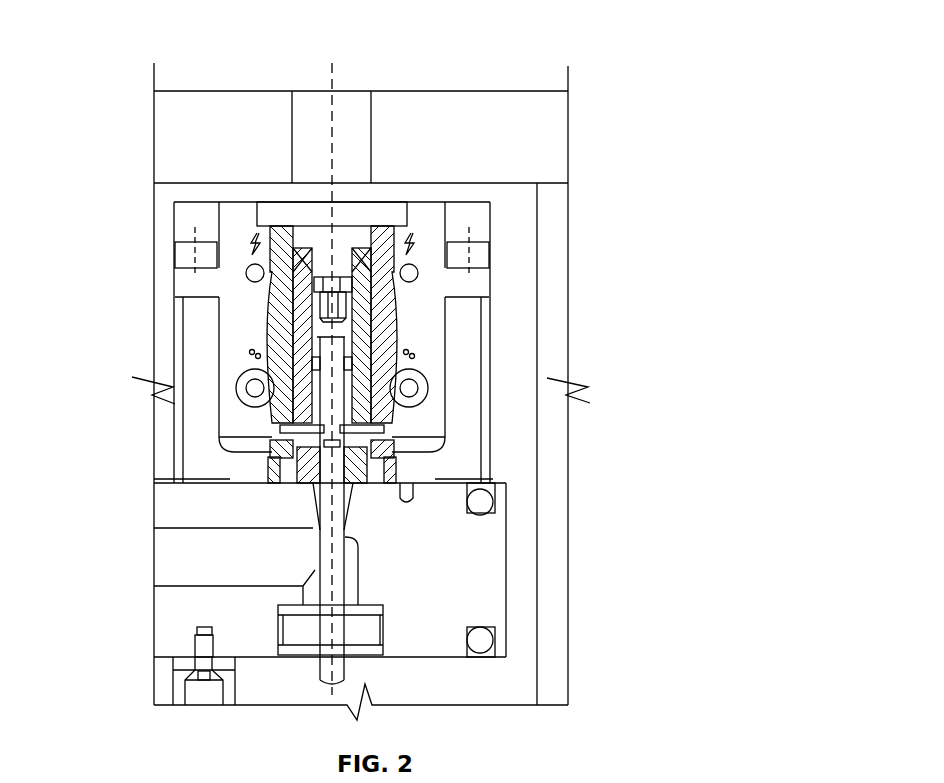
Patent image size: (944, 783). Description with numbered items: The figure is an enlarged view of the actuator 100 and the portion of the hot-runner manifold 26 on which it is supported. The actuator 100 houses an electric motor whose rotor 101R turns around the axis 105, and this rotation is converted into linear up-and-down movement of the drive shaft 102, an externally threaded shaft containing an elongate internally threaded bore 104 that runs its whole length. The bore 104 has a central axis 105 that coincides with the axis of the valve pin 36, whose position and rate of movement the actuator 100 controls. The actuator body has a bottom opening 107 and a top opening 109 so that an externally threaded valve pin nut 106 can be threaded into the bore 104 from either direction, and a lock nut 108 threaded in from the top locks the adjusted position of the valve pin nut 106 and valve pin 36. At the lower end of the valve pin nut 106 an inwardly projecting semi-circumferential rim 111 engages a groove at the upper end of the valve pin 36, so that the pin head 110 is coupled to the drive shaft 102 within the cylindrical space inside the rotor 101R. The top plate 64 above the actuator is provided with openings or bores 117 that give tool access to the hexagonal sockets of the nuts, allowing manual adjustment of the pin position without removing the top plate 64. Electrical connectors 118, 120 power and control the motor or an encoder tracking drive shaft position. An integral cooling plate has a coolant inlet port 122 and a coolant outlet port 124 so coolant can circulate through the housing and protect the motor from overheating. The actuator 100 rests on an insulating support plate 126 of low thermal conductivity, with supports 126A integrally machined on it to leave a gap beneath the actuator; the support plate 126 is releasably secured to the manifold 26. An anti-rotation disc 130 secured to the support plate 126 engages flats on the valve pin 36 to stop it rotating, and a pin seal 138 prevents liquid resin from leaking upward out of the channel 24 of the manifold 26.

The channel 24 is at (180, 567).
The manifold 26 is at (180, 617).
The valve pin 36 is at (338, 579).
The top plate 64 is at (545, 140).
The actuator 100 is at (428, 223).
The rotor 101R is at (280, 338).
The drive shaft 102 is at (372, 290).
The internally threaded bore 104 is at (343, 247).
The axis 105 is at (333, 73).
The valve pin nut 106 is at (296, 325).
The bottom opening 107 is at (443, 413).
The lock nut 108 is at (290, 248).
The top opening 109 is at (312, 217).
The pin head 110 is at (422, 372).
The semi-circumferential rim 111 is at (391, 352).
The openings or bores 117 is at (307, 98).
The electrical connector 118 is at (246, 273).
The electrical connector 120 is at (418, 268).
The coolant inlet port 122 is at (235, 388).
The coolant outlet port 124 is at (392, 427).
The insulating support plate 126 is at (458, 470).
The supports 126A is at (458, 428).
The anti-rotation disc 130 is at (278, 447).
The pin seal 138 is at (350, 490).